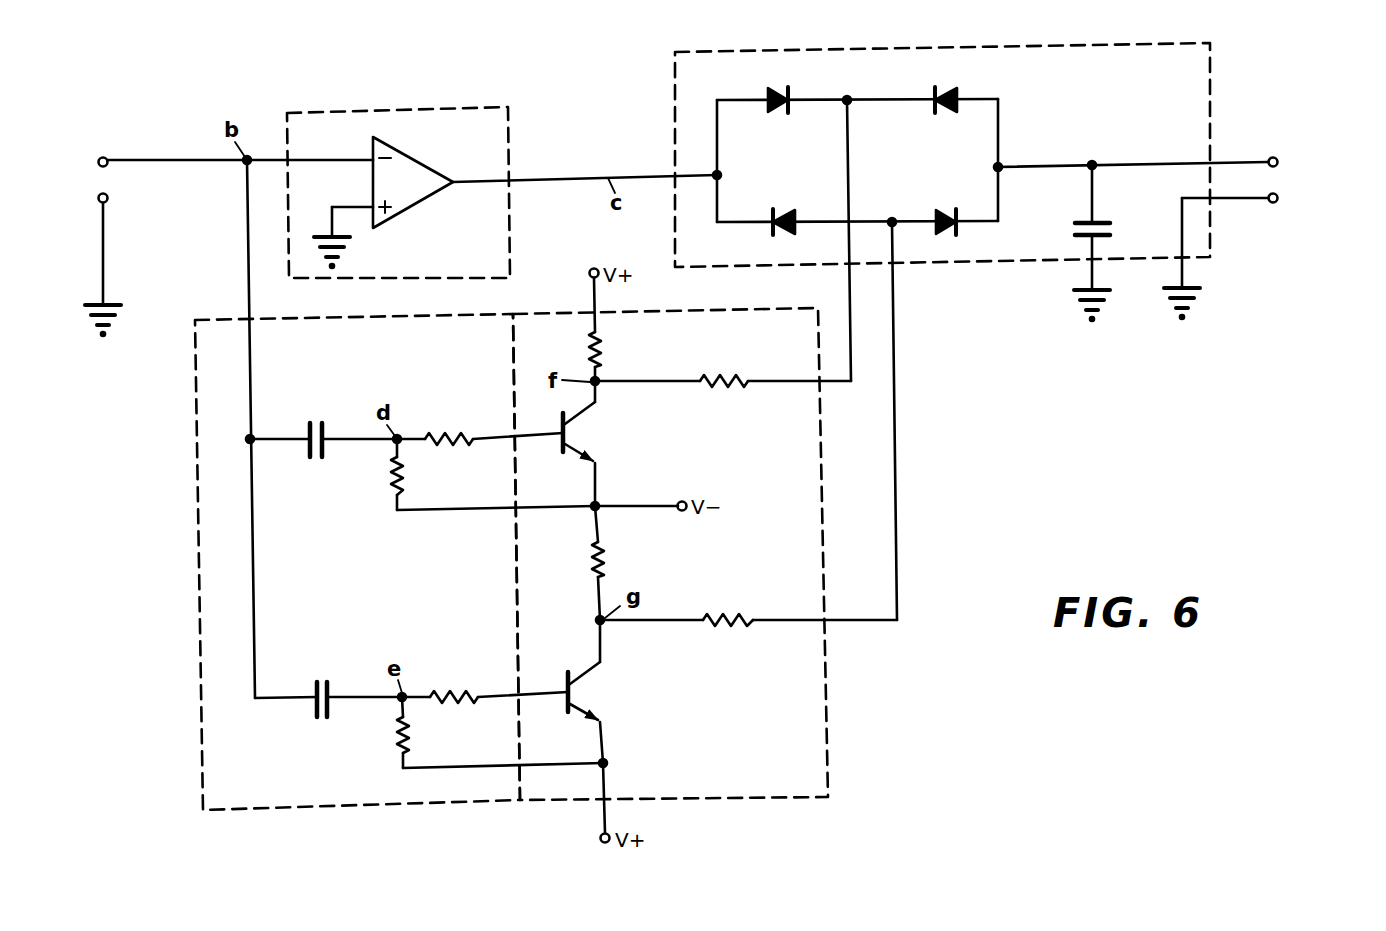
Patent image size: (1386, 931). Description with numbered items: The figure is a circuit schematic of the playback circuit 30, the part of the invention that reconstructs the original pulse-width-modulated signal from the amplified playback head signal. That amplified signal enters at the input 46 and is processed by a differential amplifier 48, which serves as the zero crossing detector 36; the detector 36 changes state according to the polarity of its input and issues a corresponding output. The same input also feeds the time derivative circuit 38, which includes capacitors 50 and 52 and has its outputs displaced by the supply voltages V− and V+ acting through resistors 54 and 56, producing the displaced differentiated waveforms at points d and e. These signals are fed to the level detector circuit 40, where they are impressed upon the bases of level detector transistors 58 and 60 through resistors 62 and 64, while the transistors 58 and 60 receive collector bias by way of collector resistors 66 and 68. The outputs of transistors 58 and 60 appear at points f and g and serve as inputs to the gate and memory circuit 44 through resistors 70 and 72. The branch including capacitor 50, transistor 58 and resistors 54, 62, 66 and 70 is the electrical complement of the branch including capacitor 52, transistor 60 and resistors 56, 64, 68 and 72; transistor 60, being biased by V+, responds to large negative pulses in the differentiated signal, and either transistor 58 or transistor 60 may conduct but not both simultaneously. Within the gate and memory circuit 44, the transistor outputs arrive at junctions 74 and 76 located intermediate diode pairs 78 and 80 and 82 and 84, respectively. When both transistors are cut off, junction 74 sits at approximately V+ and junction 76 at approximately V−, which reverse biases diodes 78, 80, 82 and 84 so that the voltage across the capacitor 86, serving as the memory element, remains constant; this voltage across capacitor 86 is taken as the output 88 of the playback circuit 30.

The playback circuit 30 is at (606, 130).
The zero crossing detector 36 is at (352, 92).
The time derivative circuit 38 is at (188, 574).
The level detector circuit 40 is at (846, 702).
The gate and memory circuit 44 is at (1002, 284).
The input 46 is at (95, 175).
The differential amplifier 48 is at (426, 186).
The capacitor 50 is at (308, 428).
The capacitor 52 is at (315, 688).
The resistor 54 is at (405, 478).
The resistor 56 is at (395, 735).
The level detector transistor 58 is at (592, 428).
The level detector transistor 60 is at (590, 690).
The resistor 62 is at (447, 432).
The resistor 64 is at (450, 688).
The collector resistor 66 is at (604, 352).
The collector resistor 68 is at (605, 562).
The resistor 70 is at (730, 375).
The resistor 72 is at (738, 625).
The junction 74 is at (845, 97).
The junction 76 is at (890, 218).
The diode 78 is at (768, 96).
The diode 80 is at (958, 92).
The diode 82 is at (788, 217).
The diode 84 is at (942, 210).
The capacitor 86 is at (1089, 222).
The output 88 is at (1293, 176).